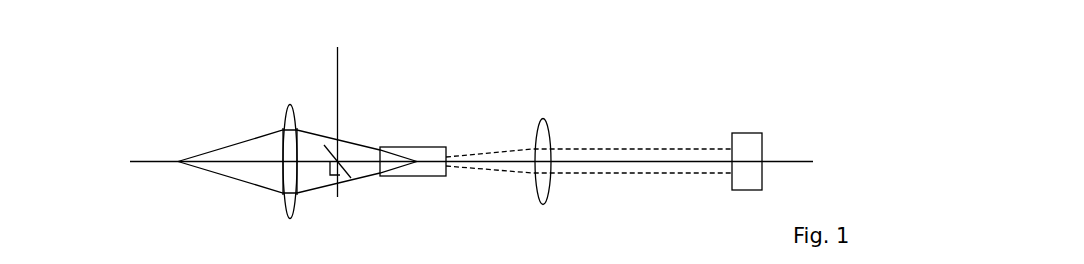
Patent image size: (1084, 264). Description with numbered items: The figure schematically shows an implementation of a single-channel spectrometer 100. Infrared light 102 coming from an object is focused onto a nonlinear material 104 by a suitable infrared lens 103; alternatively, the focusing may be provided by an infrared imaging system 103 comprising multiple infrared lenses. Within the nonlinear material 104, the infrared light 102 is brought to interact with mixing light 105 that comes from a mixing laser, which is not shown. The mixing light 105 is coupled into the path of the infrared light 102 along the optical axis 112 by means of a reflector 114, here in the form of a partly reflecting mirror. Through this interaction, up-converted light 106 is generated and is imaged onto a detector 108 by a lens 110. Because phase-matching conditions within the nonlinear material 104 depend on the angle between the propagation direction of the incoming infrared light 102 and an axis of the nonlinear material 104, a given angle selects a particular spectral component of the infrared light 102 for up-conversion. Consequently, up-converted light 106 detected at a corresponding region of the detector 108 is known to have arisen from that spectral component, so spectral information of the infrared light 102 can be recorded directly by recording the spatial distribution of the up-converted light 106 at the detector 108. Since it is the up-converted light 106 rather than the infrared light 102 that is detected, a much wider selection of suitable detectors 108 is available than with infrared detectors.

The single-channel spectrometer 100 is at (746, 35).
The infrared light 102 is at (217, 150).
The infrared lens 103 is at (291, 105).
The nonlinear material 104 is at (425, 147).
The mixing light 105 is at (338, 105).
The up-converted light 106 is at (508, 150).
The detector 108 is at (746, 133).
The lens 110 is at (543, 118).
The optical axis 112 is at (145, 162).
The reflector 114 is at (339, 184).